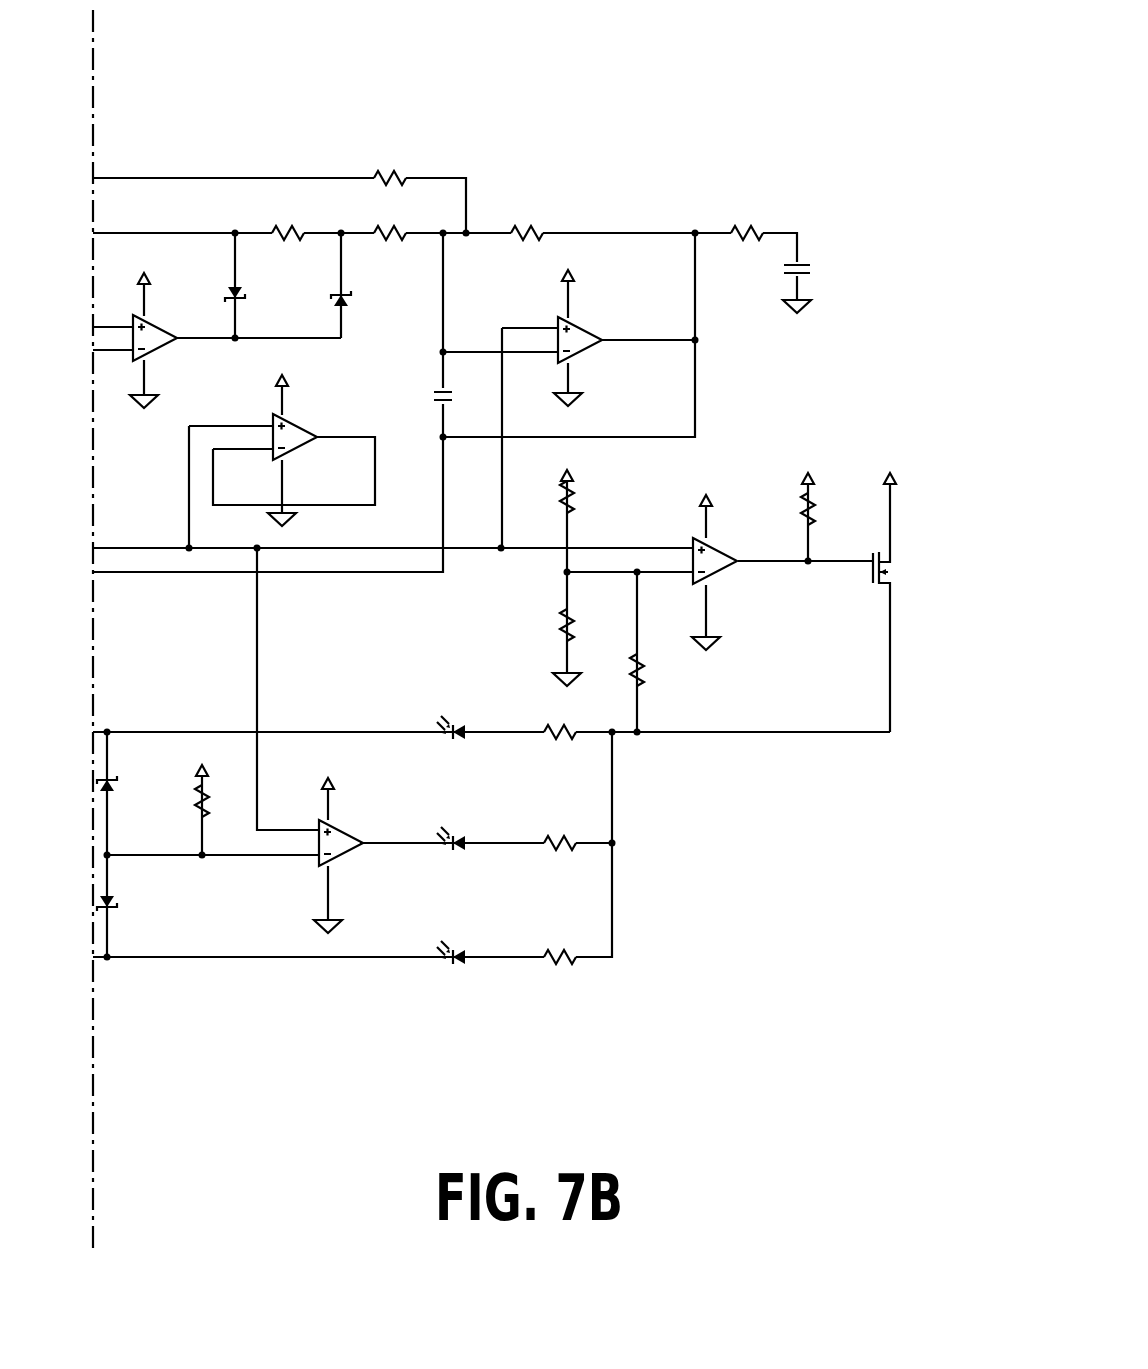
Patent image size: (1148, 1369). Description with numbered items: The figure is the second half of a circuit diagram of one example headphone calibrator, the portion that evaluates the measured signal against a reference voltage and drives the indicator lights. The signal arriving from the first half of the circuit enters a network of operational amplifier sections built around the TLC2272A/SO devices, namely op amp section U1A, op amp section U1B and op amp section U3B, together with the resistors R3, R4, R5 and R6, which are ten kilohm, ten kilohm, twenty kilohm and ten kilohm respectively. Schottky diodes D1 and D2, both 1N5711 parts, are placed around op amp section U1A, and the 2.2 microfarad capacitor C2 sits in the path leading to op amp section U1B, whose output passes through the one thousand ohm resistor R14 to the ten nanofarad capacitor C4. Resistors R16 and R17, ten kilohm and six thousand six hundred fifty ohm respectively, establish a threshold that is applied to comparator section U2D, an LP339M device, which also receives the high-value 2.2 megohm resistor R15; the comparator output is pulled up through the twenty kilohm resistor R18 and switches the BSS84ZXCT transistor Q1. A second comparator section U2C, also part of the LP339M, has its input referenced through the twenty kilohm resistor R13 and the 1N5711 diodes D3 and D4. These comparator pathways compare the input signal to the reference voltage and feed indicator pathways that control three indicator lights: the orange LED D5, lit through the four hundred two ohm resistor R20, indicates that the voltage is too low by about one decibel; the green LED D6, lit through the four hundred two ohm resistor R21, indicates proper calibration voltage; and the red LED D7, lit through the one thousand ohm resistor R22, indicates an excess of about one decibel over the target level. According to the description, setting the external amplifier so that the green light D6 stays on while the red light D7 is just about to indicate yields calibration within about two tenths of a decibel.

The resistor R3 is at (286, 233).
The resistor R4 is at (389, 233).
The resistor R5 is at (389, 178).
The resistor R6 is at (527, 233).
The resistor R13 is at (212, 777).
The resistor R14 is at (744, 233).
The resistor R15 is at (656, 668).
The resistor R16 is at (580, 477).
The resistor R17 is at (586, 617).
The resistor R18 is at (824, 483).
The resistor R20 is at (560, 730).
The resistor R21 is at (560, 842).
The resistor R22 is at (560, 957).
The capacitor C2 is at (461, 390).
The capacitor C4 is at (814, 273).
The diode D1 is at (265, 293).
The diode D2 is at (371, 293).
The diode D3 is at (133, 778).
The diode D4 is at (133, 901).
The orange LED D5 is at (469, 728).
The green LED D6 is at (465, 839).
The red LED D7 is at (446, 940).
The operational amplifier section U1A is at (184, 315).
The operational amplifier section U1B is at (608, 317).
The operational amplifier section U3B is at (316, 415).
The comparator section U2C is at (358, 820).
The comparator section U2D is at (735, 539).
The transistor Q1 is at (907, 526).